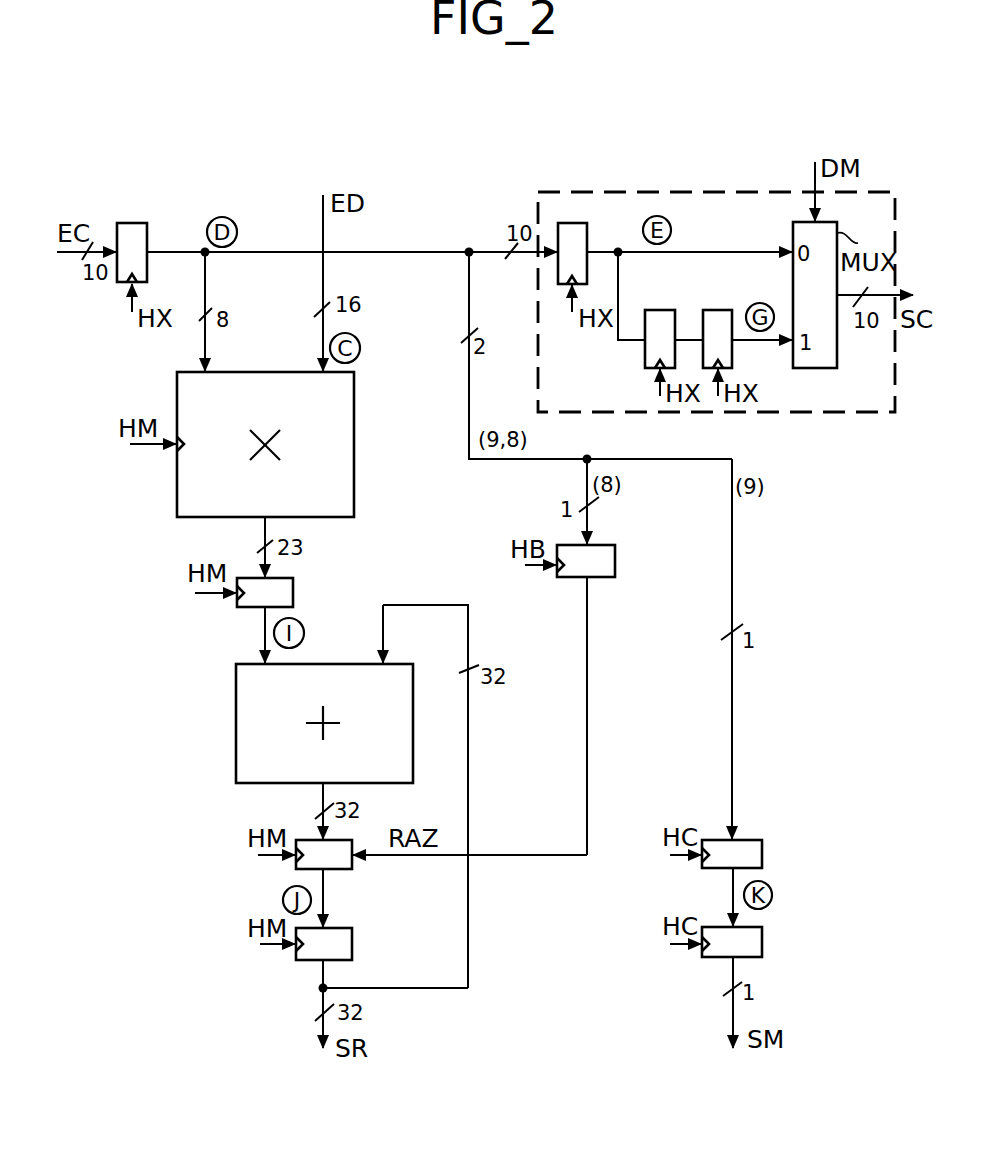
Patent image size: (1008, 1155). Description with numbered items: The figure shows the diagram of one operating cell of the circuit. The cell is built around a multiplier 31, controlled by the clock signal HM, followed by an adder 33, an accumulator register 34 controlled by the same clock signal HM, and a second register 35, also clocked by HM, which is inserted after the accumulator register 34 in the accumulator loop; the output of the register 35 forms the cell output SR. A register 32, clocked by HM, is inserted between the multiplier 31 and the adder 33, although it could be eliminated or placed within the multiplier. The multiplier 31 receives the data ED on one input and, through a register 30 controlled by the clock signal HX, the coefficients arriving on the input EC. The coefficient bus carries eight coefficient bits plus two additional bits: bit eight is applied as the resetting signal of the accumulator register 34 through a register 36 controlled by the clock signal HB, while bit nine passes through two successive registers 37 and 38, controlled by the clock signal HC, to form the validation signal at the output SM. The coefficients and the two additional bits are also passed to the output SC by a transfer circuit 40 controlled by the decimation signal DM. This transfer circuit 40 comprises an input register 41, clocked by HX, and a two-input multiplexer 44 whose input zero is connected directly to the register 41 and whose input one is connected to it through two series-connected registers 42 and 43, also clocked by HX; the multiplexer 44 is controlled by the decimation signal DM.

The register 30 is at (130, 222).
The multiplier 31 is at (354, 404).
The register 32 is at (293, 595).
The adder 33 is at (236, 727).
The accumulator register 34 is at (337, 869).
The second register 35 is at (352, 948).
The register 36 is at (603, 577).
The register 37 is at (762, 850).
The register 38 is at (762, 950).
The transfer circuit 40 is at (655, 191).
The input register 41 is at (587, 232).
The register 42 is at (655, 310).
The register 43 is at (715, 310).
The multiplexer 44 is at (803, 368).